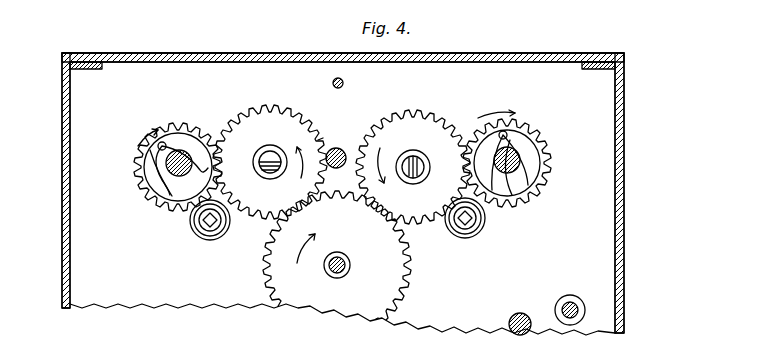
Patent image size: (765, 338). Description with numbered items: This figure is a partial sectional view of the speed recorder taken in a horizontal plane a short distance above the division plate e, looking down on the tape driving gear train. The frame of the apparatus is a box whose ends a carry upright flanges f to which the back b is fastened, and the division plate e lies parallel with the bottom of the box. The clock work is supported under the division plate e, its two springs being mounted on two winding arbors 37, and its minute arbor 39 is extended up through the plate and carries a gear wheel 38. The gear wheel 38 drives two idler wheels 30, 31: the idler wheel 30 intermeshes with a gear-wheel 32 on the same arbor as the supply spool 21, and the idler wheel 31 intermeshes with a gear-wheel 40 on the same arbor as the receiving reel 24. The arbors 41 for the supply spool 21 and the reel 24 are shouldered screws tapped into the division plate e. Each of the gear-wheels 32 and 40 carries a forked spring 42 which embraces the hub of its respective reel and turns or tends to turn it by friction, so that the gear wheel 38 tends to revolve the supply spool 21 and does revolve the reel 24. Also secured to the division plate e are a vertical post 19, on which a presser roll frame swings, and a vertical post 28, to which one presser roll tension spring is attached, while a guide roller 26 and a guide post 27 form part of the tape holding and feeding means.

The ends a is at (62, 168).
The back b is at (343, 41).
The division plate e is at (342, 295).
The upright flanges f is at (90, 72).
The vertical post 19 is at (338, 150).
The supply spool 21 is at (520, 154).
The receiving reel 24 is at (183, 135).
The guide roller 26 is at (571, 296).
The guide post 27 is at (519, 318).
The vertical post 28 is at (344, 83).
The idler wheel 30 is at (440, 126).
The idler wheel 31 is at (313, 136).
The gear-wheel 32 is at (528, 135).
The winding arbors 37 is at (214, 222).
The gear wheel 38 is at (337, 264).
The minute arbor 39 is at (350, 262).
The gear-wheel 40 is at (226, 142).
The arbors 41 is at (170, 200).
The forked spring 42 is at (168, 178).